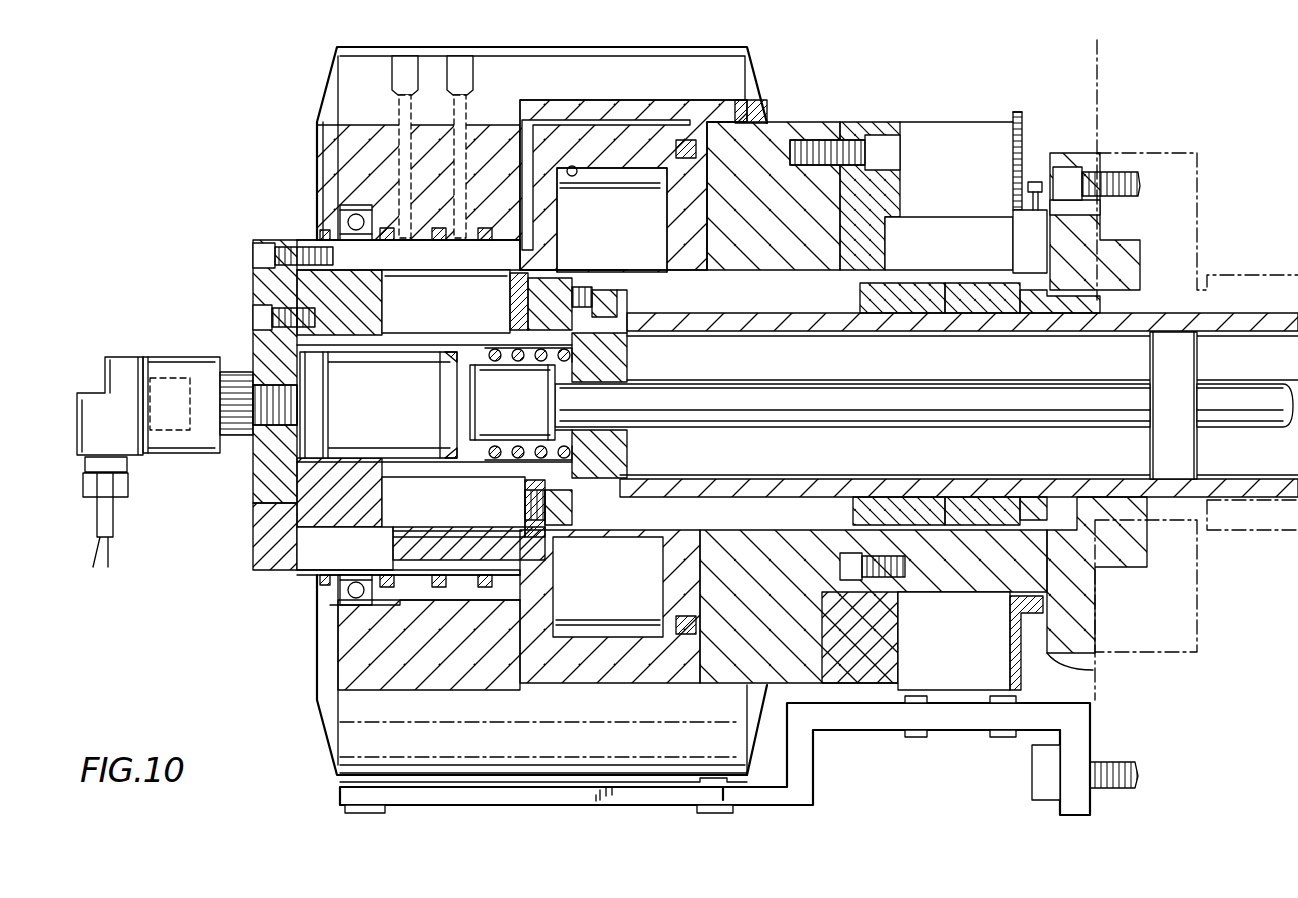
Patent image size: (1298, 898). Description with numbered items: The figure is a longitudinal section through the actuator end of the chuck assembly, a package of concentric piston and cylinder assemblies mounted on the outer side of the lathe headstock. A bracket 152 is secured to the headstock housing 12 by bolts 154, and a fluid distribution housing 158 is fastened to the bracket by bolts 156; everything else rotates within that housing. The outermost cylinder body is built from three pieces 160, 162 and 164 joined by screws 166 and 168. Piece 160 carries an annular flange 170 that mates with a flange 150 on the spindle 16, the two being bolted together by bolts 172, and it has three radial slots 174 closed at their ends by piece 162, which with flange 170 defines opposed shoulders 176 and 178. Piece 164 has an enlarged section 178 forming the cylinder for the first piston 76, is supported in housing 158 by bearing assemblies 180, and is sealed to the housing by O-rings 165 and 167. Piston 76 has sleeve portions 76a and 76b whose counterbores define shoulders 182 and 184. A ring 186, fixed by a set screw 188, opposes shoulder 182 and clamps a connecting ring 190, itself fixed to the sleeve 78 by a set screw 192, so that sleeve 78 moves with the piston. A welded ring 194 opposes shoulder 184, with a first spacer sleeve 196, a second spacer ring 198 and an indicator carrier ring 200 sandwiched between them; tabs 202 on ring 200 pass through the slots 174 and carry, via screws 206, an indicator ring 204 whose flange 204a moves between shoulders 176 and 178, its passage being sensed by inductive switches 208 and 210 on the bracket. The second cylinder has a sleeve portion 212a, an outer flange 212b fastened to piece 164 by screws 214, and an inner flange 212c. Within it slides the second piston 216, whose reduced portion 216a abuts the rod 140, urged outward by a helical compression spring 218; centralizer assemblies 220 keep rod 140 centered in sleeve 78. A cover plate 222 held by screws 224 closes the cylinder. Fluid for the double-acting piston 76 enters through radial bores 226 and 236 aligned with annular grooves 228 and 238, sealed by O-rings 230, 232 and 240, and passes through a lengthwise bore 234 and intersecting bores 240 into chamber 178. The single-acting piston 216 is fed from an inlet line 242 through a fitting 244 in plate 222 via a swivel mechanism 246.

The housing 12 is at (1218, 745).
The lathe spindle 16 is at (1255, 532).
The piston 76 is at (655, 195).
The piston sleeve portion 76a is at (632, 530).
The piston sleeve portion 76b is at (745, 535).
The sleeve 78 is at (1263, 320).
The rod 140 is at (1245, 422).
The flange 150 is at (1197, 610).
The bracket 152 is at (810, 792).
The bolts 154 is at (1140, 776).
The bolts 156 is at (343, 809).
The fluid distribution housing 158 is at (350, 695).
The cylinder piece 160 is at (973, 598).
The cylinder piece 162 is at (848, 130).
The cylinder piece 164 is at (310, 548).
The O-ring 165 is at (760, 115).
The screws 166 is at (872, 580).
The O-ring 167 is at (330, 237).
The screws 168 is at (895, 150).
The annular flange 170 is at (1095, 628).
The bolts 172 is at (1112, 175).
The radial slots 174 is at (922, 258).
The annular shoulder 176 is at (1050, 650).
The cylinder section 178 is at (565, 168).
The bearing assemblies 180 is at (330, 228).
The shoulder 182 is at (627, 470).
The shoulder 184 is at (900, 500).
The ring 186 is at (520, 298).
The set screw 188 is at (520, 512).
The connecting ring 190 is at (617, 295).
The set screw 192 is at (580, 288).
The ring 194 is at (1060, 318).
The first spacer sleeve 196 is at (905, 318).
The second spacer ring 198 is at (975, 318).
The indicator carrier ring 200 is at (1025, 497).
The tabs 202 is at (1020, 235).
The indicator ring 204 is at (1095, 210).
The flange 204a is at (1020, 140).
The screws 206 is at (1040, 182).
The inductive switch 208 is at (1000, 740).
The inductive switch 210 is at (918, 740).
The sleeve portion 212a is at (415, 340).
The annular flange 212b is at (265, 285).
The annular flange 212c is at (620, 365).
The screws 214 is at (262, 250).
The second actuator piston 216 is at (378, 405).
The reduced diameter portion 216a is at (434, 403).
The helical compression spring 218 is at (580, 422).
The centralizer assembly 220 is at (1197, 363).
The cover plate 222 is at (262, 485).
The screws 224 is at (262, 318).
The radial bore 226 is at (405, 162).
The external annular groove 228 is at (348, 212).
The O-ring 230 is at (348, 592).
The O-ring 232 is at (395, 597).
The lengthwise bore 234 is at (535, 538).
The radial bore 236 is at (460, 165).
The external annular groove 238 is at (495, 227).
The intersecting bores 240 is at (685, 140).
The inlet line 242 is at (100, 540).
The fitting 244 is at (185, 455).
The swivel mechanism 246 is at (100, 355).